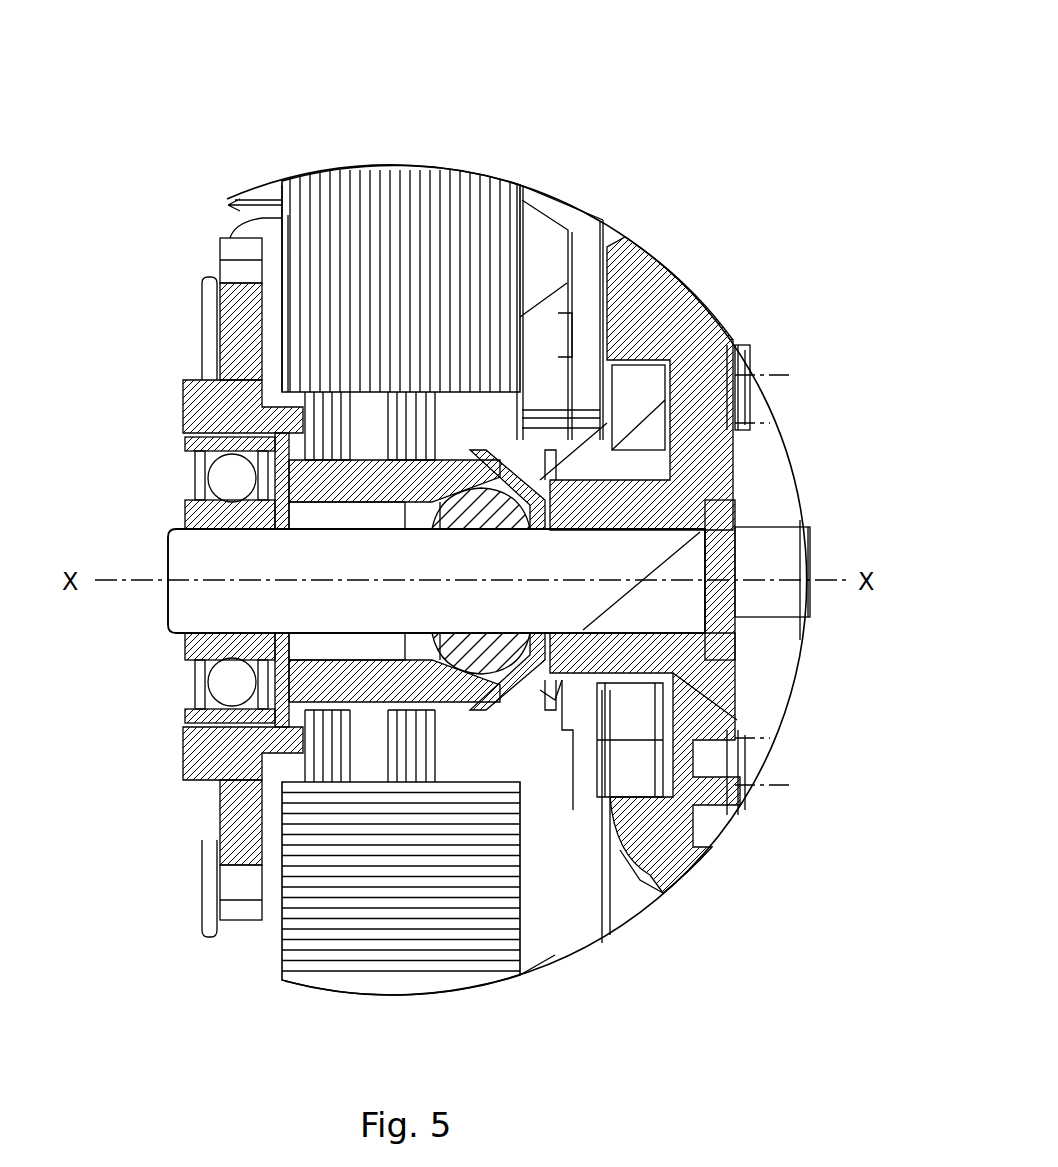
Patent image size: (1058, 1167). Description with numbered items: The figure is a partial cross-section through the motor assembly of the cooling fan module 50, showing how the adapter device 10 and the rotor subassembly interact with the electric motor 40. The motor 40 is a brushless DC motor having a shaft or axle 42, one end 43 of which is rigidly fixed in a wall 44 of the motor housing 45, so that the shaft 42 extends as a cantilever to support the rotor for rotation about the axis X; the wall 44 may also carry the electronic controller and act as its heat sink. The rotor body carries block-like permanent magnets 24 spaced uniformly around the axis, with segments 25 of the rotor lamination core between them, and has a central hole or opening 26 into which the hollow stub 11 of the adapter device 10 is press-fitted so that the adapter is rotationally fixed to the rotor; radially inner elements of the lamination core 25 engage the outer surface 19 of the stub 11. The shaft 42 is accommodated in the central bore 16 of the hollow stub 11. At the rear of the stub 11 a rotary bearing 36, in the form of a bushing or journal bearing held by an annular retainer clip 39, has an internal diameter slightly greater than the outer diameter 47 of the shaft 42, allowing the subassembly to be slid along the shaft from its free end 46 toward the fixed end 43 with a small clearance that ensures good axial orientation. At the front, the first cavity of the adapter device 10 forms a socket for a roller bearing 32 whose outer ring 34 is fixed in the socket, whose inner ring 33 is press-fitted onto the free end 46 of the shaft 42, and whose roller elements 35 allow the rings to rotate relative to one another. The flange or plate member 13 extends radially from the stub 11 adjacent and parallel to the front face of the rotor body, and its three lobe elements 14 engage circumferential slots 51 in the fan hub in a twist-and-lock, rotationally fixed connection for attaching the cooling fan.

The adapter device 10 is at (135, 785).
The hollow stub 11 is at (372, 460).
The flange or plate member 13 is at (250, 360).
The lobe elements 14 is at (218, 287).
The central bore 16 is at (352, 650).
The outer surface 19 is at (456, 452).
The permanent magnets 24 is at (322, 178).
The segments of rotor lamination core 25 is at (405, 388).
The hole or opening 26 is at (482, 712).
The roller bearing 32 is at (185, 465).
The inner ring 33 is at (195, 515).
The outer ring 34 is at (195, 712).
The roller elements 35 is at (232, 682).
The rotary bearing 36 is at (695, 350).
The annular retainer clip 39 is at (513, 490).
The electric motor 40 is at (620, 215).
The shaft or axle 42 is at (440, 616).
The end of shaft 43 is at (700, 600).
The wall 44 is at (685, 320).
The motor housing 45 is at (625, 935).
The free end 46 is at (165, 558).
The outer diameter 47 is at (315, 631).
The cooling fan module 50 is at (167, 108).
The circumferential slots 51 is at (222, 300).